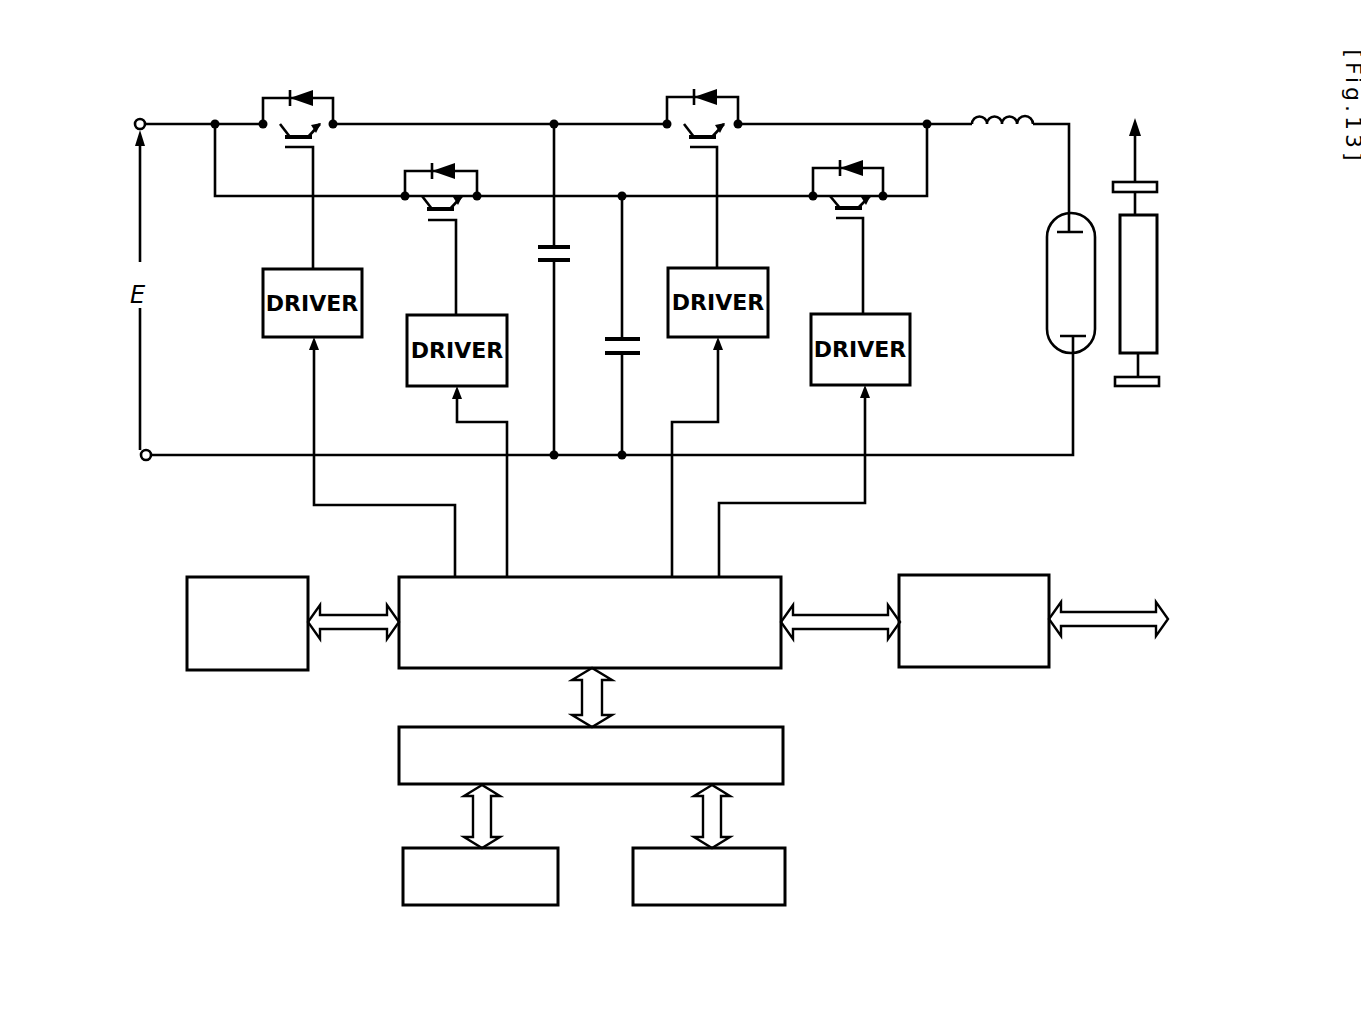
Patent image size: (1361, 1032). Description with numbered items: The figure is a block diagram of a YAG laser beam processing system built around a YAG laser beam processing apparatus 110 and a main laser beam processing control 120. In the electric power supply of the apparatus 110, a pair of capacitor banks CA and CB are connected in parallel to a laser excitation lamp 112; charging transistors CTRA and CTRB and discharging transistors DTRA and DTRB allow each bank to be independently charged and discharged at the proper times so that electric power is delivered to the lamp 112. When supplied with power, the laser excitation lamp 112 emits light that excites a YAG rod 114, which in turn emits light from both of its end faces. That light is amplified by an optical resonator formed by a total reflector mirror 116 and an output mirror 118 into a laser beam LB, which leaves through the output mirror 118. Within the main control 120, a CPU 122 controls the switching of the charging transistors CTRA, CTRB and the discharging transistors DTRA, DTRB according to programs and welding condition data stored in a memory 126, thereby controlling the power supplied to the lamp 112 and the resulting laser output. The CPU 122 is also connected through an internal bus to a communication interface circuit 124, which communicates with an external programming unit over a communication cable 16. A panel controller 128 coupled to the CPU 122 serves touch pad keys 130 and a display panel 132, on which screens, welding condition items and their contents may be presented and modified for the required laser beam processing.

The YAG laser beam processing apparatus 110 is at (1076, 107).
The laser excitation lamp 112 is at (1046, 271).
The YAG rod 114 is at (1158, 270).
The total reflector mirror 116 is at (1160, 381).
The output mirror 118 is at (1160, 188).
The main laser beam processing control 120 is at (352, 703).
The CPU 122 is at (782, 588).
The communication interface circuit 124 is at (1008, 575).
The memory 126 is at (187, 603).
The panel controller 128 is at (784, 753).
The touch pad keys 130 is at (403, 882).
The display panel 132 is at (786, 878).
The communication cable 16 is at (1108, 610).
The charging transistor CTRA is at (320, 95).
The charging transistor CTRB is at (462, 180).
The discharging transistor DTRA is at (725, 100).
The discharging transistor DTRB is at (866, 175).
The capacitor bank CA is at (536, 251).
The capacitor bank CB is at (604, 340).
The laser beam LB is at (1140, 150).